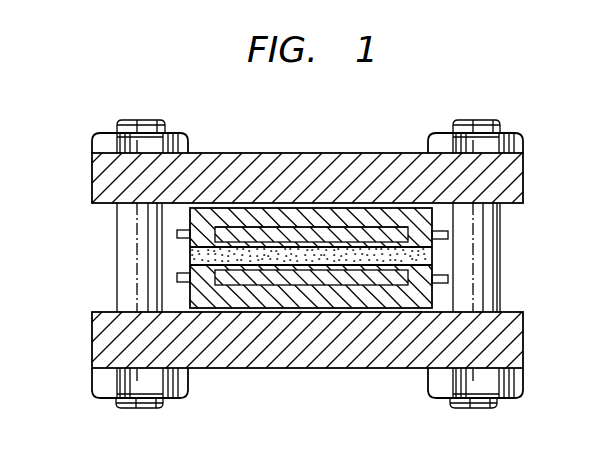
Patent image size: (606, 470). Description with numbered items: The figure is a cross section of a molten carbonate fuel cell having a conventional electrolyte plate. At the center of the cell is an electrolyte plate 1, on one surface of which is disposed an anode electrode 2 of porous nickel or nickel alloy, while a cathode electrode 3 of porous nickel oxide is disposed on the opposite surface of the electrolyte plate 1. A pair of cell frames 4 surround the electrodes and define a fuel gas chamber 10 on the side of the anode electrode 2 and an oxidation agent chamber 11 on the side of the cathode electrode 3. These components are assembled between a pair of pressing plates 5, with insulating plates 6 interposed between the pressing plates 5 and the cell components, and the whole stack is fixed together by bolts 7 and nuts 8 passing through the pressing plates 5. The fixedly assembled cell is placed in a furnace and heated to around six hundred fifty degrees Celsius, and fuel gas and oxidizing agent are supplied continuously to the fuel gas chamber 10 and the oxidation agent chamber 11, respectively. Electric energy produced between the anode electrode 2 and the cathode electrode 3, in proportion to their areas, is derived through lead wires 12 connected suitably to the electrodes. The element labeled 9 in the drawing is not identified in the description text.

The electrolyte plate 1 is at (448, 266).
The anode electrode 2 is at (325, 240).
The cathode electrode 3 is at (325, 272).
The cell frame 4 is at (425, 223).
The pressing plate 5 is at (523, 178).
The insulating plate 6 is at (283, 210).
The bolt 7 is at (117, 262).
The nut 8 is at (96, 389).
The upper electrode layer 9 is at (250, 243).
The fuel gas chamber 10 is at (225, 232).
The oxidation agent chamber 11 is at (223, 298).
The lead wire 12 is at (190, 217).